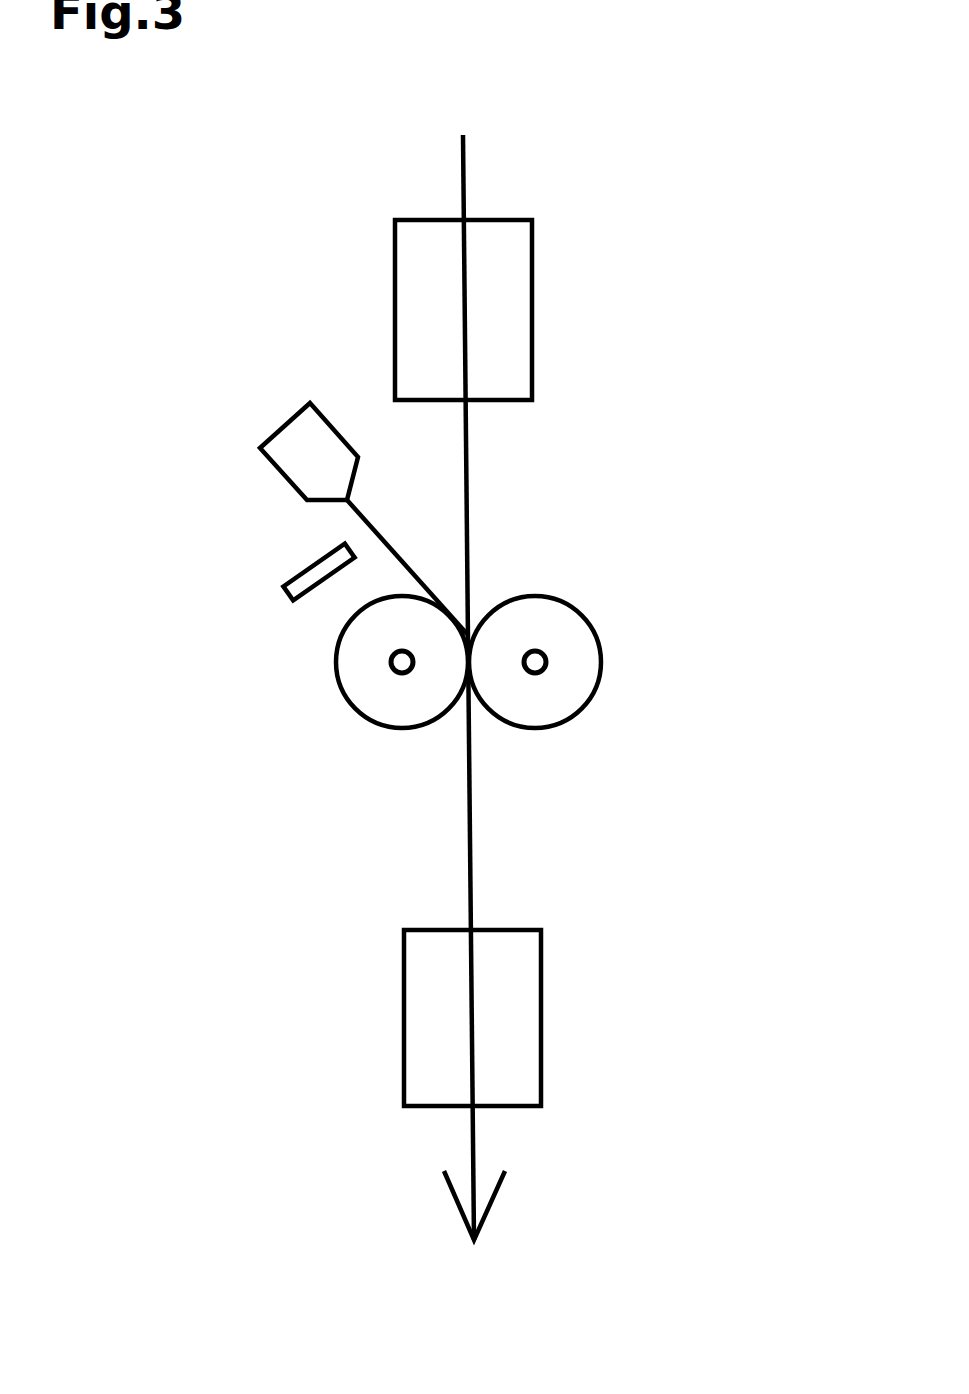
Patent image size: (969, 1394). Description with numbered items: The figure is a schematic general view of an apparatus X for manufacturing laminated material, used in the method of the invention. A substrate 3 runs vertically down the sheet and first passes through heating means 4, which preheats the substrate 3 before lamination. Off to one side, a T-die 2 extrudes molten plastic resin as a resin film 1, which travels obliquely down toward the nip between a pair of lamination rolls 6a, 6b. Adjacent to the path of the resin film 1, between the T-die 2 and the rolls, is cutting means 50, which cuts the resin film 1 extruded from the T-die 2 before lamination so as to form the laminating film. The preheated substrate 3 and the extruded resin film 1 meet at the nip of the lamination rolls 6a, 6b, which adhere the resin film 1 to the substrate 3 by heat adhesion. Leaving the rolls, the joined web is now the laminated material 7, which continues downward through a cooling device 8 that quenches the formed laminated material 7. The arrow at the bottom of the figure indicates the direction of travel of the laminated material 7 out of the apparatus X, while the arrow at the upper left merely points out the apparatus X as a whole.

The resin film 1 is at (397, 545).
The T-die 2 is at (297, 465).
The substrate 3 is at (463, 165).
The heating means 4 is at (508, 315).
The cutting means 50 is at (305, 566).
The lamination roll 6a is at (333, 653).
The lamination roll 6b is at (602, 663).
The laminated material 7 is at (472, 836).
The cooling device 8 is at (504, 1020).
The apparatus for manufacturing laminated material X is at (222, 392).